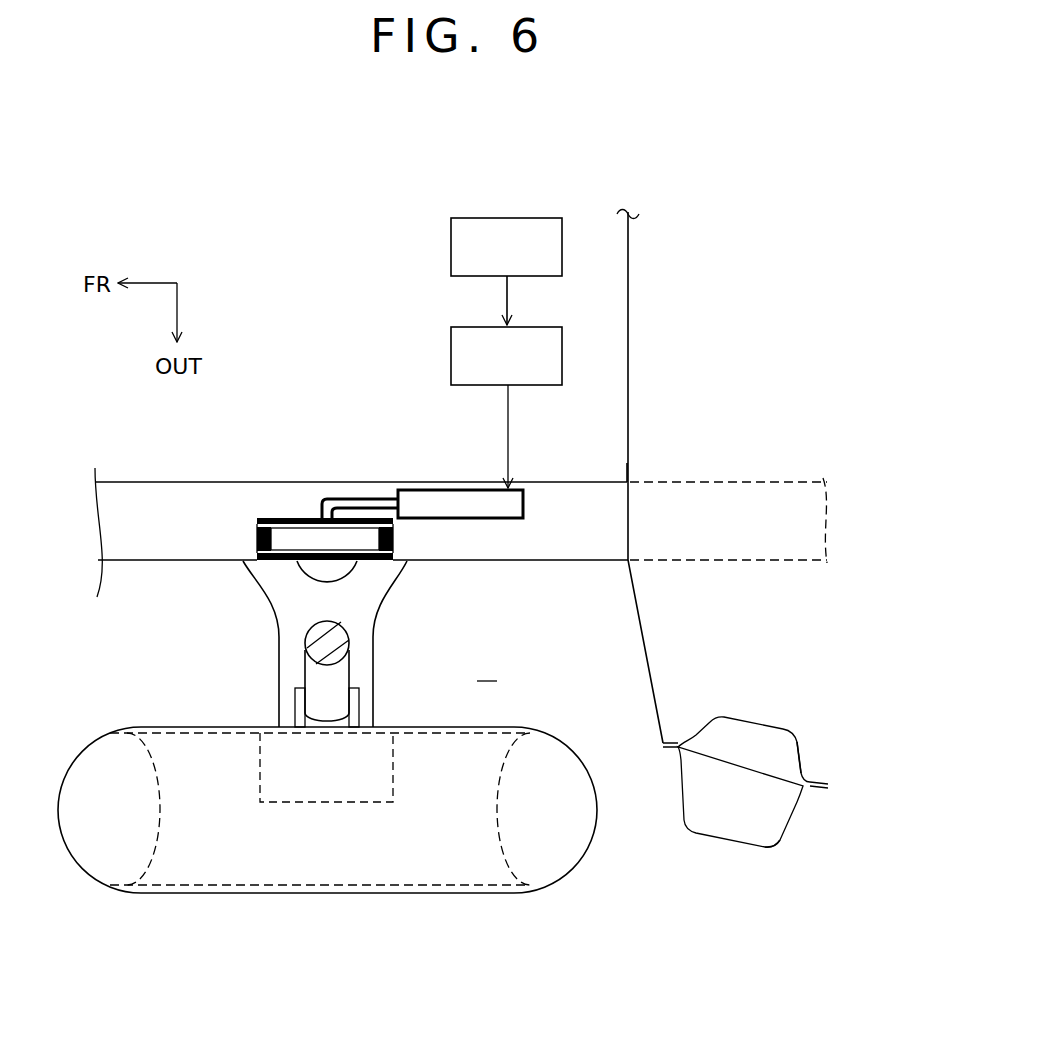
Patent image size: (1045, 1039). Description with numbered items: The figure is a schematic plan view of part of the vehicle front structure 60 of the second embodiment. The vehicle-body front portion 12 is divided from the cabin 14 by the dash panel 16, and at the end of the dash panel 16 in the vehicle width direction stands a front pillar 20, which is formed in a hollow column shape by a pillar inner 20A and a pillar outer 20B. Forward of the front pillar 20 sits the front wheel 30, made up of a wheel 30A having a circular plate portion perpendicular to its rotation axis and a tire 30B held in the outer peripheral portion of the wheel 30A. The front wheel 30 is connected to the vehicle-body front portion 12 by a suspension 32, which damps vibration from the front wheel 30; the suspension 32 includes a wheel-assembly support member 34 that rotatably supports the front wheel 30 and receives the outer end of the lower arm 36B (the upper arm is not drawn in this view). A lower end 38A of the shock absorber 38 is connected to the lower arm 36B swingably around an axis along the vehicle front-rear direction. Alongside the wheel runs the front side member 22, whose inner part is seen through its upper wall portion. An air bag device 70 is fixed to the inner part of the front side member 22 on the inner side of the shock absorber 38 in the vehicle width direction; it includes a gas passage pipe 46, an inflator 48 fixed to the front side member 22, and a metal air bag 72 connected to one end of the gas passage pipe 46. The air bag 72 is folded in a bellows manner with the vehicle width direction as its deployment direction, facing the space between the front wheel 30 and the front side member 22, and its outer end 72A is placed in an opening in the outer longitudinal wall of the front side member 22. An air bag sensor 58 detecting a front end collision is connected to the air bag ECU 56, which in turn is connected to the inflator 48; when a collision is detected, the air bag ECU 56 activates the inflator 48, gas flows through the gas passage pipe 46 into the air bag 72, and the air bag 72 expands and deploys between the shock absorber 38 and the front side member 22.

The vehicle-body front portion 12 is at (323, 268).
The cabin 14 is at (783, 250).
The dash panel 16 is at (639, 428).
The front pillar 20 is at (820, 823).
The pillar inner 20A is at (803, 746).
The pillar outer 20B is at (765, 848).
The front side member 22 is at (220, 476).
The front wheel 30 is at (471, 907).
The wheel 30A is at (382, 874).
The tire 30B is at (97, 868).
The suspension 32 is at (241, 698).
The wheel-assembly support member 34 is at (338, 803).
The lower arm 36B is at (278, 661).
The shock absorber 38 is at (356, 630).
The lower end of the shock absorber 38A is at (340, 728).
The gas passage pipe 46 is at (347, 497).
The inflator 48 is at (460, 490).
The air bag ECU 56 is at (548, 327).
The air bag sensor 58 is at (540, 218).
The vehicle front structure 60 is at (395, 232).
The air bag device 70 is at (527, 545).
The air bag 72 is at (253, 539).
The outer end of the air bag 72A is at (401, 553).